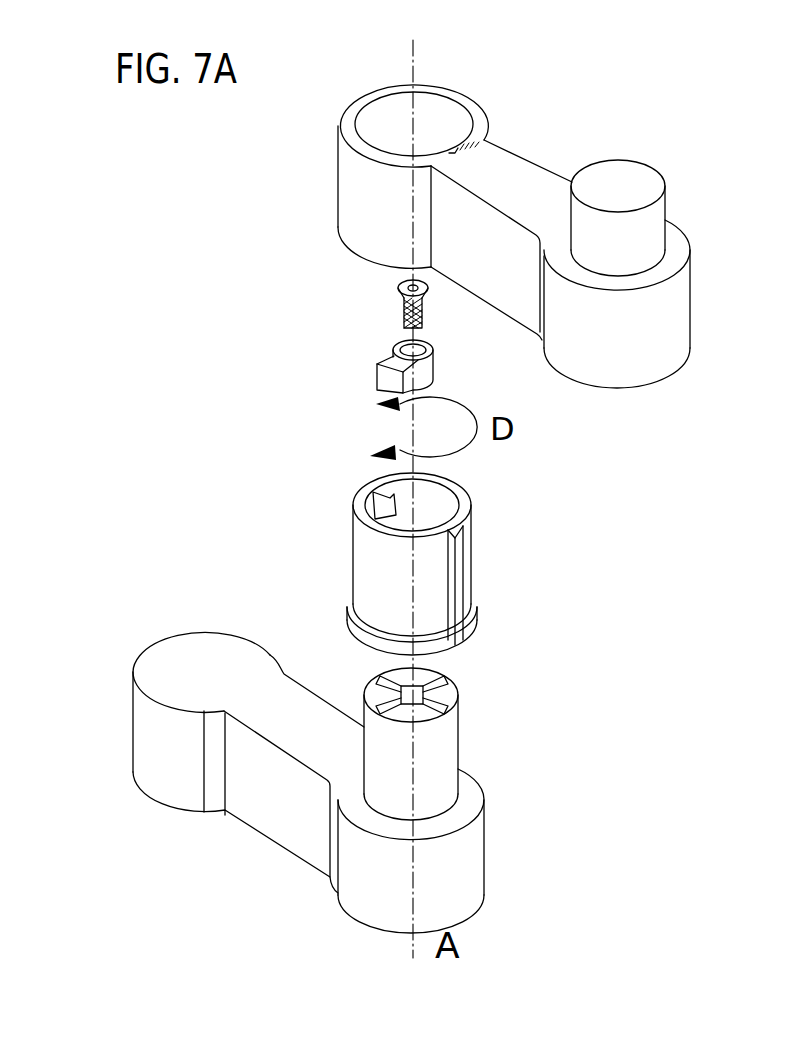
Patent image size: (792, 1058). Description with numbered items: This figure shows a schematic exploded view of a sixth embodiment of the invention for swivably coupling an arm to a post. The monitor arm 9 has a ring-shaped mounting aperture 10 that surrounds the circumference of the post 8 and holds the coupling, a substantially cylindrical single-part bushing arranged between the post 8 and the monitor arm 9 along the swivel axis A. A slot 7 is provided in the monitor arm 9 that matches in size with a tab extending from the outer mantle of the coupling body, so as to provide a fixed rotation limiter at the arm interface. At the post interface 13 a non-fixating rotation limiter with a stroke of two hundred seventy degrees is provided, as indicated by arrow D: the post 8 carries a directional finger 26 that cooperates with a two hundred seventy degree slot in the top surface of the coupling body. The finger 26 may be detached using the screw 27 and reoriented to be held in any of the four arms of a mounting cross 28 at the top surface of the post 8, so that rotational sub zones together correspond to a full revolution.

The slot 7 is at (457, 151).
The mounting aperture 10 is at (382, 140).
The post 8 is at (613, 223).
The monitor arm 9 is at (605, 335).
The screw 27 is at (402, 304).
The directional finger 26 is at (402, 370).
The post interface 13 is at (440, 496).
The mounting cross 28 is at (440, 678).